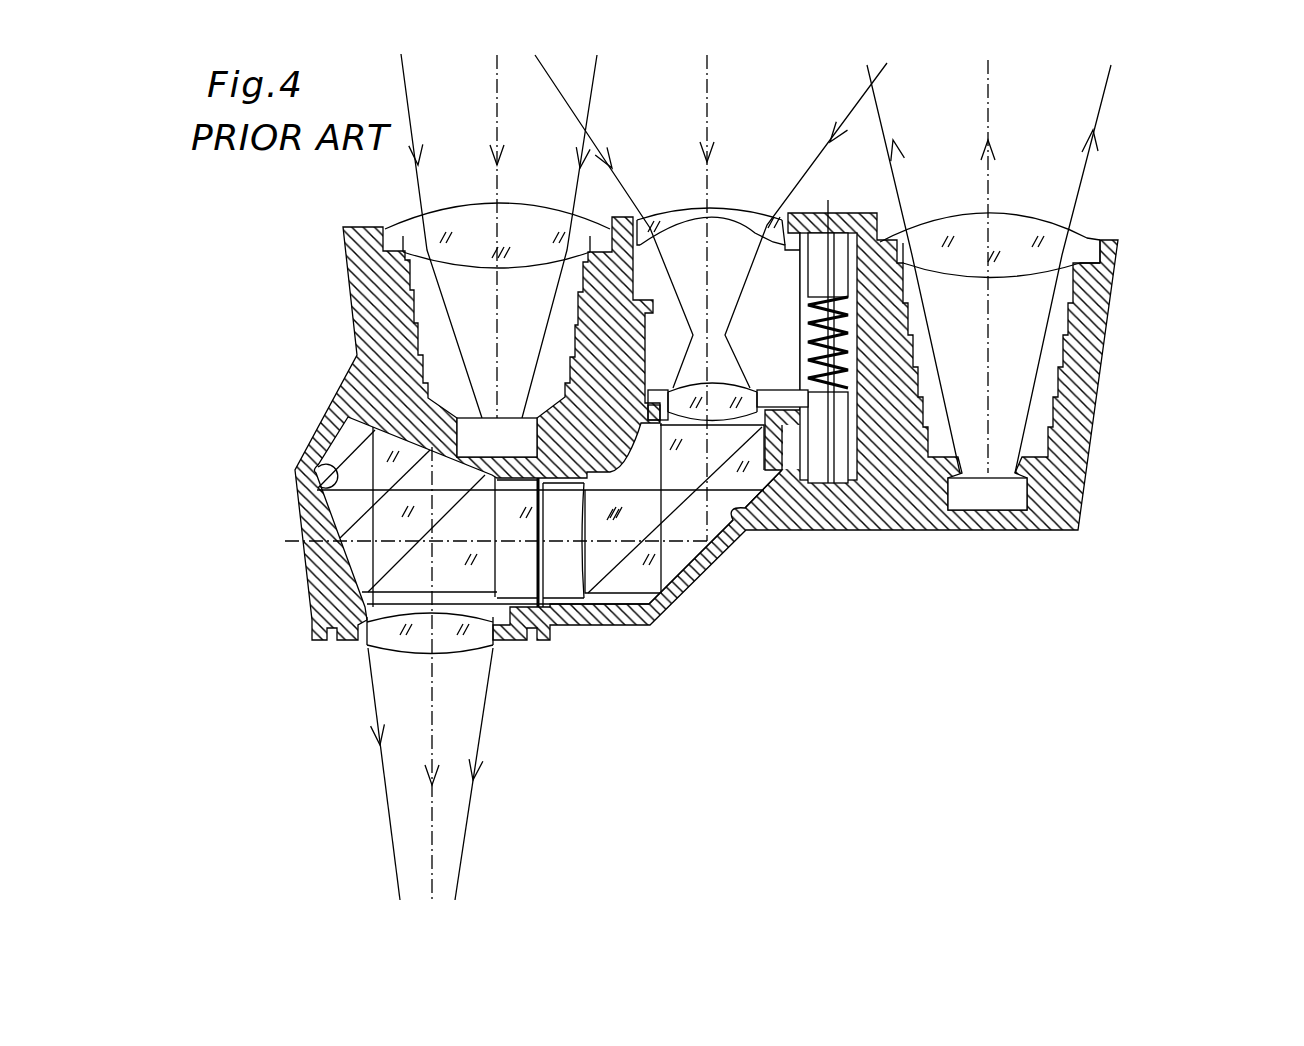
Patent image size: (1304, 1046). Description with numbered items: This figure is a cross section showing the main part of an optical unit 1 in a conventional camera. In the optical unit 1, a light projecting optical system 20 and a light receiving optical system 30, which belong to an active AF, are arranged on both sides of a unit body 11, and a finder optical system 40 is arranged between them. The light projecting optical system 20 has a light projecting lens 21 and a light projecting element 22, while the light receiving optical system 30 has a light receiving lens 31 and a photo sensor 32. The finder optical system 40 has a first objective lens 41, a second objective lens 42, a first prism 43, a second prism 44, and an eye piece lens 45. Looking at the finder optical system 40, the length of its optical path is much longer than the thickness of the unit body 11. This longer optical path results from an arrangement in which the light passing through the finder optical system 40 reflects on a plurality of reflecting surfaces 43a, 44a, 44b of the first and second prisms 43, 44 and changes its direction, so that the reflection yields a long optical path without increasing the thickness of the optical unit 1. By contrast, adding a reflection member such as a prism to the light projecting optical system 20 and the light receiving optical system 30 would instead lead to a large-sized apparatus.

The optical unit 1 is at (1173, 533).
The unit body 11 is at (828, 483).
The light projecting optical system 20 is at (1085, 360).
The light projecting lens 21 is at (1048, 240).
The light projecting element 22 is at (1028, 492).
The light receiving optical system 30 is at (396, 330).
The light receiving lens 31 is at (414, 240).
The photo sensor 32 is at (476, 417).
The finder optical system 40 is at (514, 399).
The first objective lens 41 is at (747, 212).
The second objective lens 42 is at (766, 392).
The first prism 43 is at (677, 557).
The reflecting surface 43a is at (728, 517).
The second prism 44 is at (343, 503).
The reflecting surface 44a is at (380, 448).
The reflecting surface 44b is at (297, 468).
The eye piece lens 45 is at (470, 645).